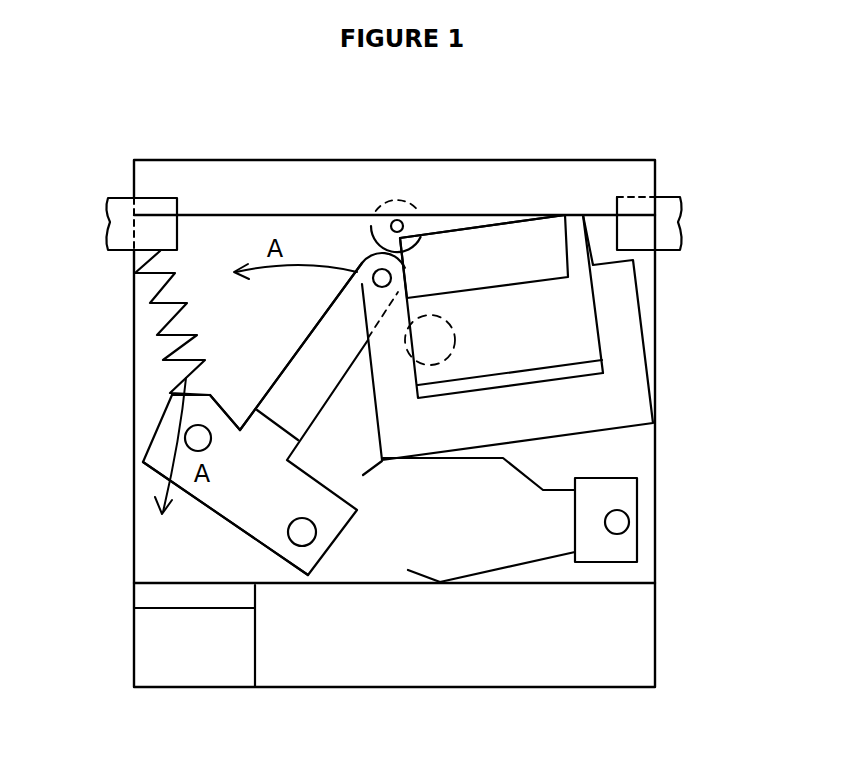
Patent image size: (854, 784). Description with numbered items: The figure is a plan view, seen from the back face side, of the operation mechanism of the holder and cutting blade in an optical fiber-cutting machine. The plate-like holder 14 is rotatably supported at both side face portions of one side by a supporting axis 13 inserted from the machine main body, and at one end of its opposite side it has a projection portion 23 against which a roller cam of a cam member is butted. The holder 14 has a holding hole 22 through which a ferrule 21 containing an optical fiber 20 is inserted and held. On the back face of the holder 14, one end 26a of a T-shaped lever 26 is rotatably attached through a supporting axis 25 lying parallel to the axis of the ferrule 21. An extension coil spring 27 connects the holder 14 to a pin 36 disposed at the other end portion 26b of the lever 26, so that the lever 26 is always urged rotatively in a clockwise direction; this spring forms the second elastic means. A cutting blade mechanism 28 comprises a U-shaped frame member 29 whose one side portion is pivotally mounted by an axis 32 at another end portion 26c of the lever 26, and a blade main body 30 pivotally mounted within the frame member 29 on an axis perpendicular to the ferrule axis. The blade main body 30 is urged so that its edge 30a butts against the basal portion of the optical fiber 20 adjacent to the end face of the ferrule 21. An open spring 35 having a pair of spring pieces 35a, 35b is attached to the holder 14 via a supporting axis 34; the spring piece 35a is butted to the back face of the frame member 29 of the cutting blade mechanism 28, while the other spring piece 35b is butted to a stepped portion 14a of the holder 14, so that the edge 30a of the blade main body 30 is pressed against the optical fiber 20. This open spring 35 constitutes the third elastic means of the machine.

The supporting axis 13 is at (125, 236).
The holder 14 is at (655, 460).
The stepped portion 14a is at (465, 582).
The optical fiber 20 is at (400, 222).
The ferrule 21 is at (392, 212).
The holding hole 22 is at (372, 224).
The projection portion 23 is at (163, 600).
The supporting axis 25 is at (310, 543).
The T-shaped lever 26 is at (255, 518).
The one end of lever 26a is at (333, 525).
The other end portion of lever 26b is at (170, 442).
The another end portion of lever 26c is at (358, 275).
The extension coil spring 27 is at (158, 300).
The cutting blade mechanism 28 is at (738, 290).
The U-shaped frame member 29 is at (632, 397).
The blade main body 30 is at (593, 313).
The edge 30a is at (407, 237).
The axis 32 is at (472, 228).
The supporting axis 34 is at (622, 525).
The open spring 35 is at (572, 670).
The spring piece 35a is at (492, 460).
The spring piece 35b is at (497, 572).
The pin 36 is at (222, 418).